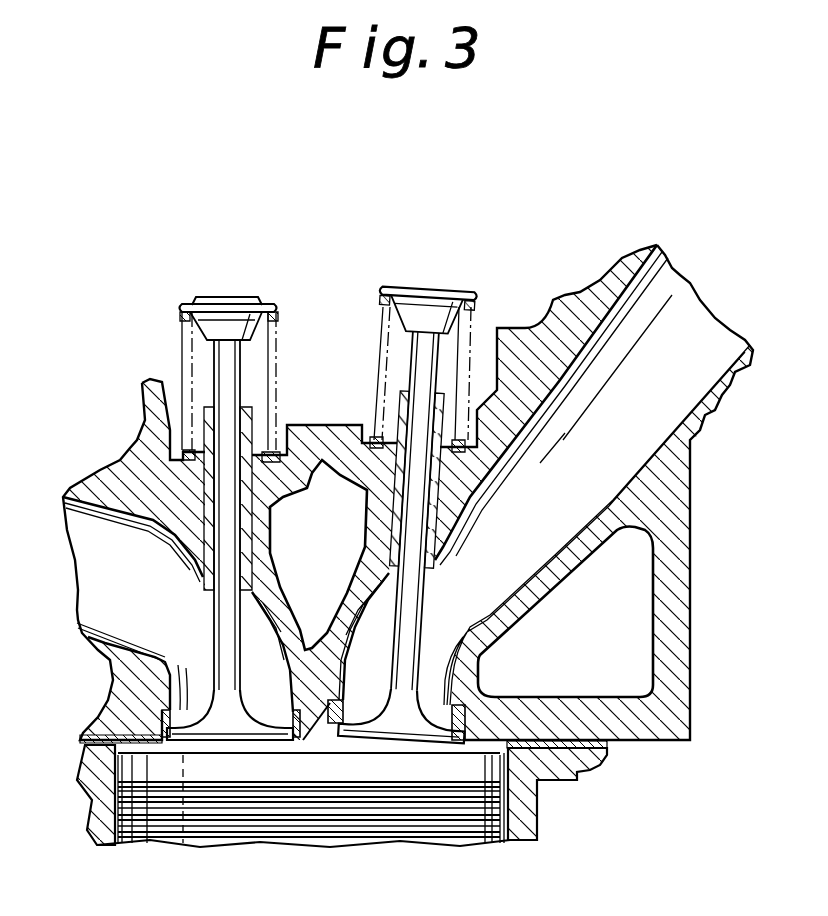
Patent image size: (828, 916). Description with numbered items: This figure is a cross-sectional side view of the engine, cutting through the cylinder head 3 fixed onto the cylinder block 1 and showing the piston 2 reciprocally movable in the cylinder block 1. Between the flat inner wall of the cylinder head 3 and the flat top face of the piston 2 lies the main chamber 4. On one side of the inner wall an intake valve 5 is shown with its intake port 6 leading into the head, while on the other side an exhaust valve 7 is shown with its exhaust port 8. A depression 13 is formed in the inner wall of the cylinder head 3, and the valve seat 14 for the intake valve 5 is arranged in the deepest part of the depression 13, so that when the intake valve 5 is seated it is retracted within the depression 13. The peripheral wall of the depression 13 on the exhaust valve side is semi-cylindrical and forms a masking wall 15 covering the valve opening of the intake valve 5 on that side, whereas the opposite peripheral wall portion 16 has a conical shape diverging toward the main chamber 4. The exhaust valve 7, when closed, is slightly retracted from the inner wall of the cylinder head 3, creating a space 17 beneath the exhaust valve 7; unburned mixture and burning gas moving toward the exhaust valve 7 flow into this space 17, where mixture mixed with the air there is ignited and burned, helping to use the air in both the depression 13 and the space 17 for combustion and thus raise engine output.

The cylinder block 1 is at (535, 812).
The piston 2 is at (373, 803).
The cylinder head 3 is at (533, 367).
The main chamber 4 is at (232, 752).
The intake valve 5 is at (403, 678).
The intake port 6 is at (587, 572).
The exhaust valve 7 is at (233, 675).
The exhaust port 8 is at (145, 600).
The depression 13 is at (345, 742).
The valve seat 14 is at (487, 722).
The masking wall 15 is at (350, 745).
The peripheral wall portion 16 is at (465, 740).
The space 17 is at (170, 745).